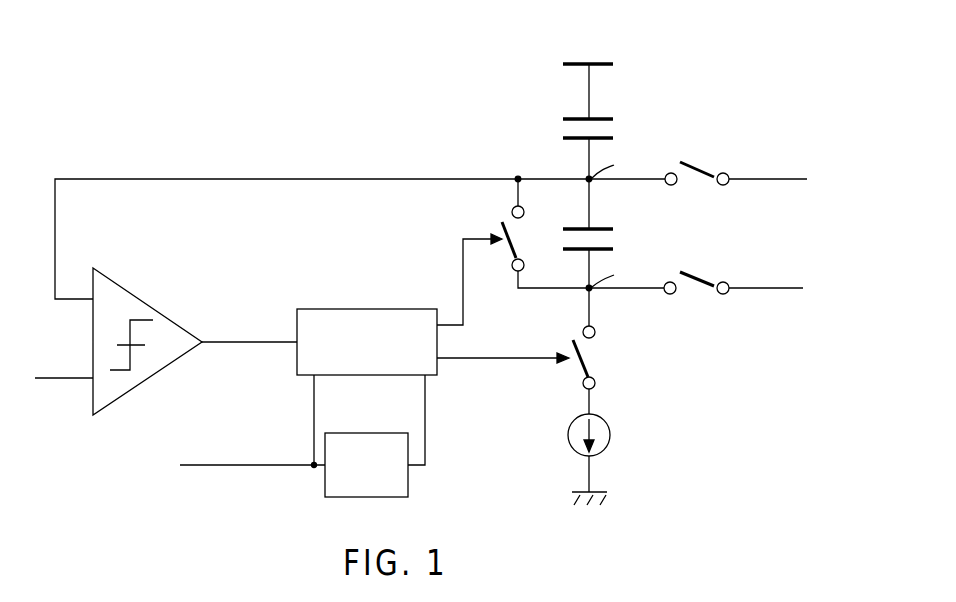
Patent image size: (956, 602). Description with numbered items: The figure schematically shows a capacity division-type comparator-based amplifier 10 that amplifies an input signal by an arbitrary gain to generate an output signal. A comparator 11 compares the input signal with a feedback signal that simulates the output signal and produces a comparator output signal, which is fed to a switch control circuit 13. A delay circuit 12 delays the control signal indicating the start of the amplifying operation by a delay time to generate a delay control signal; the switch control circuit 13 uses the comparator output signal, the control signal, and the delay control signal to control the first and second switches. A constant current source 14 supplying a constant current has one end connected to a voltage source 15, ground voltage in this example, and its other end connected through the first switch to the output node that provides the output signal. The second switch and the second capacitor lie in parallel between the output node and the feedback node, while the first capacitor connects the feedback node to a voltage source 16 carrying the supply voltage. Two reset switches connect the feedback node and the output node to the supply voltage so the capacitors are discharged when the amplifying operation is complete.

The amplifier 10 is at (180, 85).
The comparator 11 is at (161, 315).
The delay circuit 12 is at (385, 432).
The switch control circuit 13 is at (387, 308).
The constant current source 14 is at (568, 433).
The voltage source 15 is at (605, 492).
The voltage source 16 is at (612, 63).